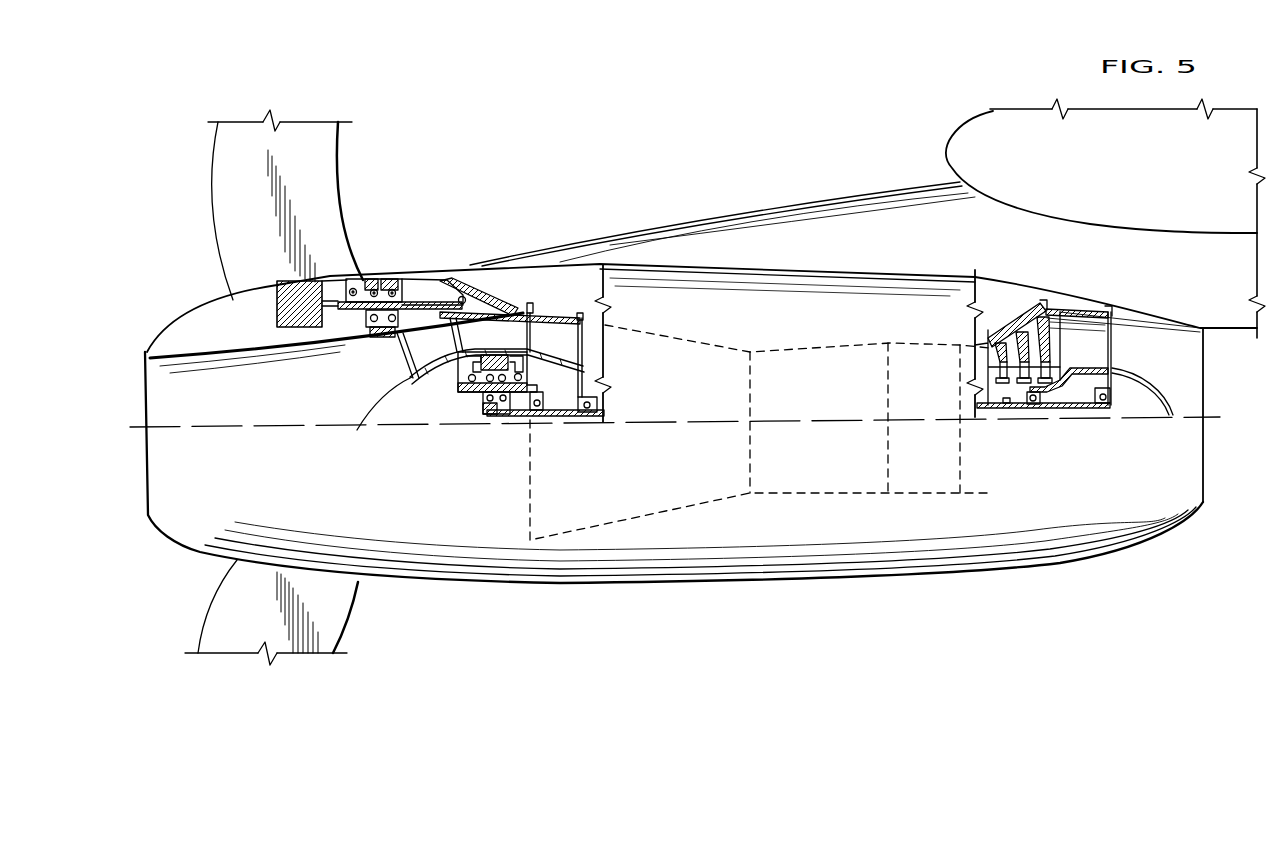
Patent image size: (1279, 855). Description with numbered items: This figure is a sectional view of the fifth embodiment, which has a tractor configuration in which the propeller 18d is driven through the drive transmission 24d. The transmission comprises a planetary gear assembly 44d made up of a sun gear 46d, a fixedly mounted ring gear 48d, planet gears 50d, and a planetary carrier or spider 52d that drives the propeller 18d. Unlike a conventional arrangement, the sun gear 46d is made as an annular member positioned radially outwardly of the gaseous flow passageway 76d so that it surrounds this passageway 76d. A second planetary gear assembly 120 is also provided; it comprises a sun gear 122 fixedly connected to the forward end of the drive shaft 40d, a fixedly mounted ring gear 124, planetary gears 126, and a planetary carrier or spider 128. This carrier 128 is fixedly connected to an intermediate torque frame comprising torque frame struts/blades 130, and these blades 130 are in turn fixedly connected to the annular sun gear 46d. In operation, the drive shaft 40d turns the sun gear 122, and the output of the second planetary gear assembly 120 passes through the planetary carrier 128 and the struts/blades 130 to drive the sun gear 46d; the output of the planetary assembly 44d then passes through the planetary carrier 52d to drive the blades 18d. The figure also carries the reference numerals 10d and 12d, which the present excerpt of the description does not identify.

The nacelle 10d is at (204, 296).
The propeller 18d is at (332, 167).
The planetary gear assembly 44d is at (378, 272).
The ring gear 48d is at (388, 286).
The drive transmission 24d is at (434, 266).
The ring gear 124 is at (498, 353).
The core engine 12d is at (797, 350).
The planetary carrier or spider 52d is at (339, 320).
The planet gears 50d is at (385, 328).
The sun gear 46d is at (400, 334).
The gaseous flow passageway 76d is at (443, 350).
The torque frame struts/blades 130 is at (458, 357).
The planetary carrier or spider 128 is at (470, 392).
The sun gear 122 is at (492, 410).
The planetary gears 126 is at (502, 410).
The second planetary gear assembly 120 is at (503, 418).
The drive shaft 40d is at (580, 413).